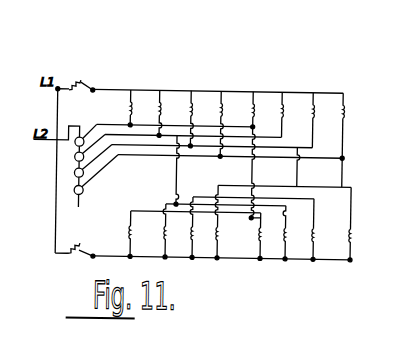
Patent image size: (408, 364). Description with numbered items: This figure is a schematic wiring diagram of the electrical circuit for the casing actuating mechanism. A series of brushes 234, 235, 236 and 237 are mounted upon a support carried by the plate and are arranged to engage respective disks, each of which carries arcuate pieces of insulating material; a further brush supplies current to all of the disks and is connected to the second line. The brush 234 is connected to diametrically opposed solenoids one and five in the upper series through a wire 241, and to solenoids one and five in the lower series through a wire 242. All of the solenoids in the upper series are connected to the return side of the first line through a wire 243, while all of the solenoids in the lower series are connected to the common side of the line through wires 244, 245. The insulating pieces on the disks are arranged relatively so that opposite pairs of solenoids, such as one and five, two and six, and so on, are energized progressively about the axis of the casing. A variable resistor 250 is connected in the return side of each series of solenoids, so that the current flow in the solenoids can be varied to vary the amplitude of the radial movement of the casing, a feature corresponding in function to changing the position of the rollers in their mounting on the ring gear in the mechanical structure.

The brush 234 is at (77, 149).
The brush 235 is at (77, 164).
The brush 236 is at (77, 180).
The brush 237 is at (77, 197).
The wire 241 is at (220, 128).
The wire 242 is at (252, 172).
The wire 243 is at (177, 91).
The wire 244 is at (265, 259).
The wire 245 is at (58, 230).
The variable resistor 250 is at (74, 79).